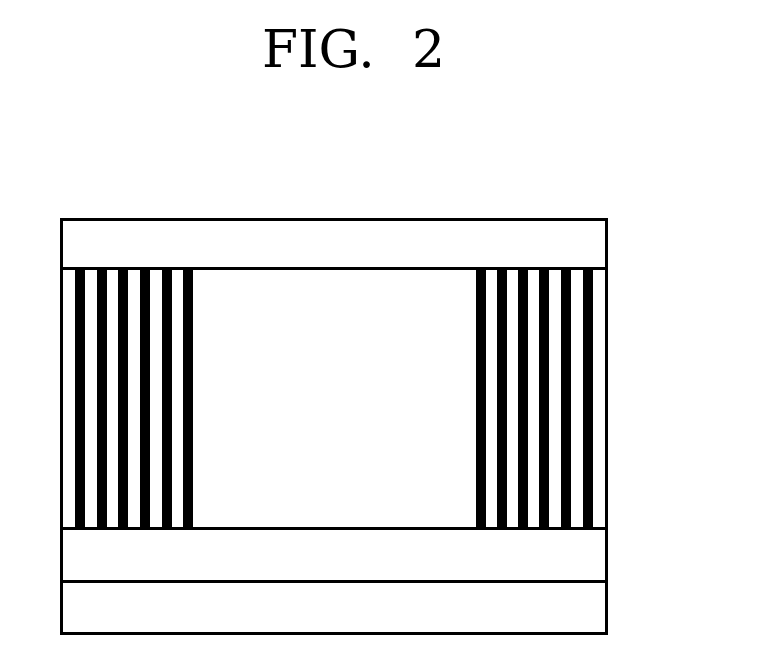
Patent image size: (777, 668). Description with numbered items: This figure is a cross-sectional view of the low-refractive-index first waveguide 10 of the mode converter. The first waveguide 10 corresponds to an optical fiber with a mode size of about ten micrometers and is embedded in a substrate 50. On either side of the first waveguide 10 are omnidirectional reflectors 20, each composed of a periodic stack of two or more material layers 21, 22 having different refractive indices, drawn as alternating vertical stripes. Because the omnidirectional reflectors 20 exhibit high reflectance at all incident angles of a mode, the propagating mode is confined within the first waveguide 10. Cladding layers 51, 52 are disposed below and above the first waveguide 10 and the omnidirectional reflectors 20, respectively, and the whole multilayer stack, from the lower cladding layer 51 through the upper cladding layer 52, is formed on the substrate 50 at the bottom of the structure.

The first waveguide 10 is at (348, 404).
The omnidirectional reflectors 20 is at (334, 317).
The material layer 21 is at (111, 276).
The material layer 22 is at (159, 278).
The substrate 50 is at (595, 609).
The cladding layer 51 is at (595, 556).
The cladding layer 52 is at (595, 243).